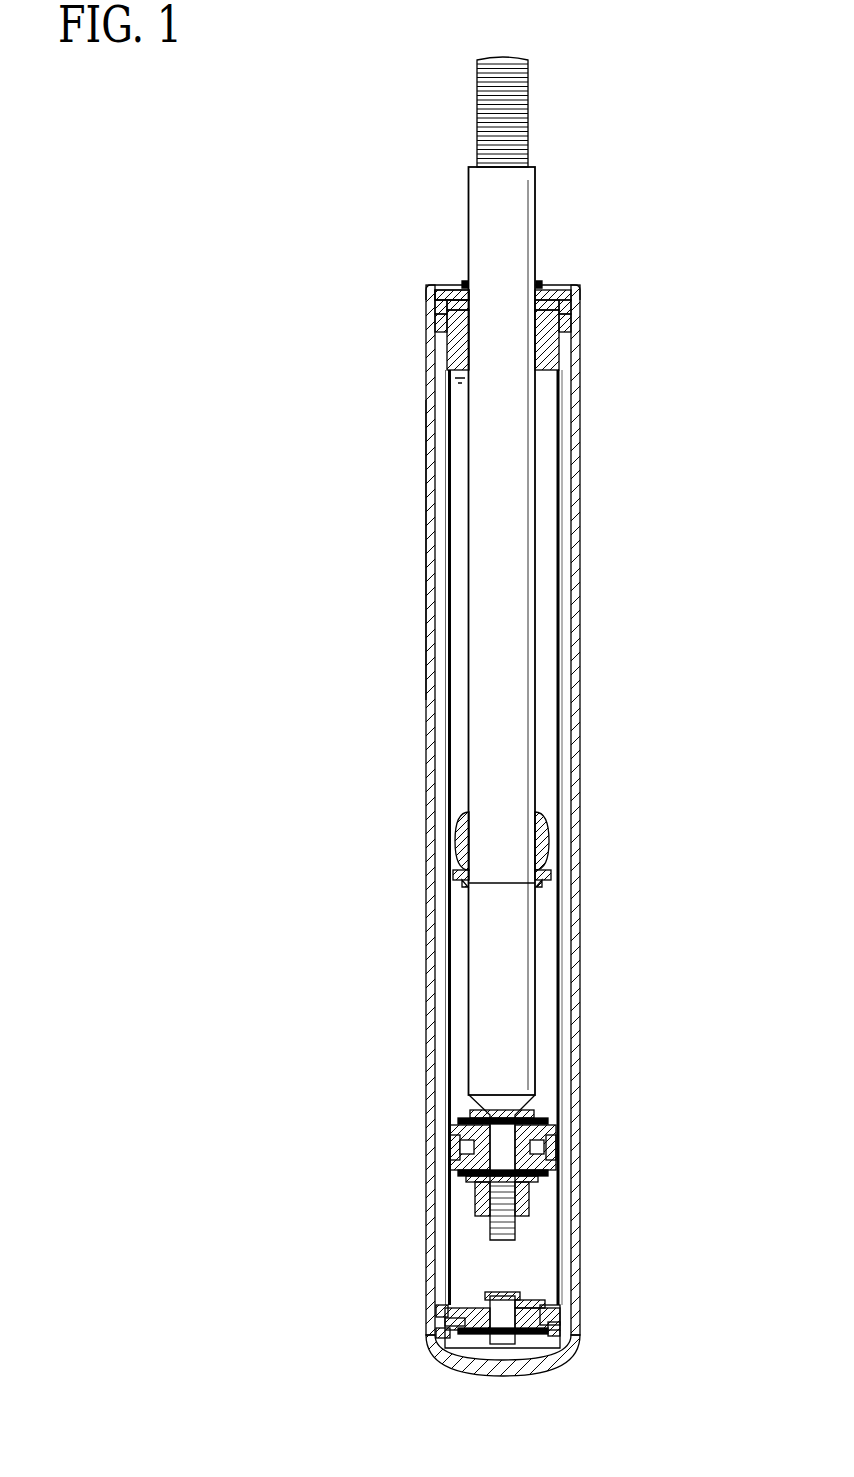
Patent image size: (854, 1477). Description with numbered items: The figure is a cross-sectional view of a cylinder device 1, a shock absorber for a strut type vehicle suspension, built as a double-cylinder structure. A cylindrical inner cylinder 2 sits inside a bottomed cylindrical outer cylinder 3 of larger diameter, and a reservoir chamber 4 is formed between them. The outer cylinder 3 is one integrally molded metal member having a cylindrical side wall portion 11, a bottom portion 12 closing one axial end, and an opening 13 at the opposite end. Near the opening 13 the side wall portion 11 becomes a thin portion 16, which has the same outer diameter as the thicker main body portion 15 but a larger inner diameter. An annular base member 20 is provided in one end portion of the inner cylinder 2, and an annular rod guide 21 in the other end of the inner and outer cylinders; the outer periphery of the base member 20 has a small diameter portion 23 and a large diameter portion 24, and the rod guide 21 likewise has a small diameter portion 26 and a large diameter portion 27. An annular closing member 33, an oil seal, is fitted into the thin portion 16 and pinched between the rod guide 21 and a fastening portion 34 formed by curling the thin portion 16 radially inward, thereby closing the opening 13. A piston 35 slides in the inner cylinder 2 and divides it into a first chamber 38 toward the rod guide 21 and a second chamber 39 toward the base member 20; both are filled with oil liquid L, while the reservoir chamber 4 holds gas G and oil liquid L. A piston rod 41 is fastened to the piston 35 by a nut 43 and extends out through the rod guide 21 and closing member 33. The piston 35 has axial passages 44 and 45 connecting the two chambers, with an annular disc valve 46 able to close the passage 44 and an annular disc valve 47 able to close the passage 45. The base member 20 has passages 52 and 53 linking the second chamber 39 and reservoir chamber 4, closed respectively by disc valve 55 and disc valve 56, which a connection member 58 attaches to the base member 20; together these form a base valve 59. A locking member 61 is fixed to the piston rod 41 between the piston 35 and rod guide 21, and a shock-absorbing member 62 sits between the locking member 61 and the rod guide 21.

The cylinder device 1 is at (632, 112).
The inner cylinder 2 is at (558, 755).
The outer cylinder 3 is at (580, 712).
The reservoir chamber 4 is at (563, 818).
The side wall portion 11 is at (576, 788).
The bottom portion 12 is at (540, 1352).
The opening 13 is at (545, 290).
The main body portion 15 is at (430, 516).
The thin portion 16 is at (425, 316).
The base member 20 is at (556, 1312).
The rod guide 21 is at (572, 318).
The small diameter portion 23 is at (442, 1310).
The large diameter portion 24 is at (436, 1333).
The small diameter portion 26 is at (450, 345).
The large diameter portion 27 is at (430, 306).
The closing member 33 is at (462, 285).
The fastening portion 34 is at (440, 288).
The piston 35 is at (560, 1150).
The first chamber 38 is at (542, 972).
The second chamber 39 is at (540, 1243).
The piston rod 41 is at (540, 218).
The nut 43 is at (530, 1198).
The passage 44 is at (553, 1158).
The passage 45 is at (465, 1150).
The disc valve 46 is at (535, 1120).
The disc valve 47 is at (470, 1177).
The passage 52 is at (445, 1322).
The passage 53 is at (560, 1328).
The disc valve 55 is at (445, 1348).
The disc valve 56 is at (540, 1300).
The connection member 58 is at (505, 1298).
The base valve 59 is at (528, 1292).
The locking member 61 is at (453, 875).
The shock-absorbing member 62 is at (460, 835).
The gas G is at (568, 482).
The oil liquid L is at (455, 585).